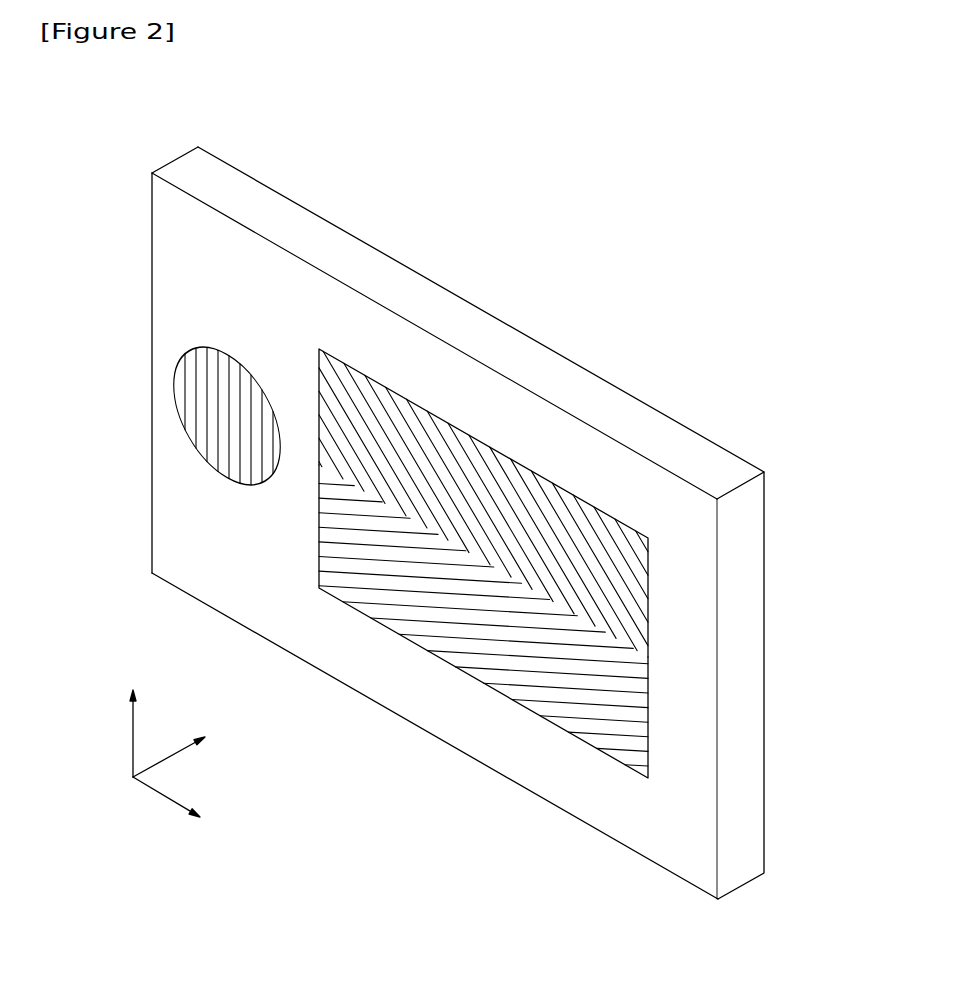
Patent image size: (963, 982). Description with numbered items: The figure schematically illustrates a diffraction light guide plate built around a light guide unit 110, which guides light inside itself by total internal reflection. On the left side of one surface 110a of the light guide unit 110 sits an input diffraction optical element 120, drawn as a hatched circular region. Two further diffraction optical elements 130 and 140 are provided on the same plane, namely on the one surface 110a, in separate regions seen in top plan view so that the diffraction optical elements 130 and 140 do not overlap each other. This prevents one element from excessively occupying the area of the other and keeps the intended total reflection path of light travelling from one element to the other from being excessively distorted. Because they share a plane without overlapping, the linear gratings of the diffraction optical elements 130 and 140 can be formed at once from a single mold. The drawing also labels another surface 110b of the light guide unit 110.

The light guide unit 110 is at (401, 489).
The one surface of the light guide unit 110a is at (152, 303).
The top surface of substrate 110b is at (278, 192).
The input diffraction optical element 120 is at (176, 380).
The diffraction optical element 130 is at (648, 598).
The diffraction optical element 140 is at (648, 720).